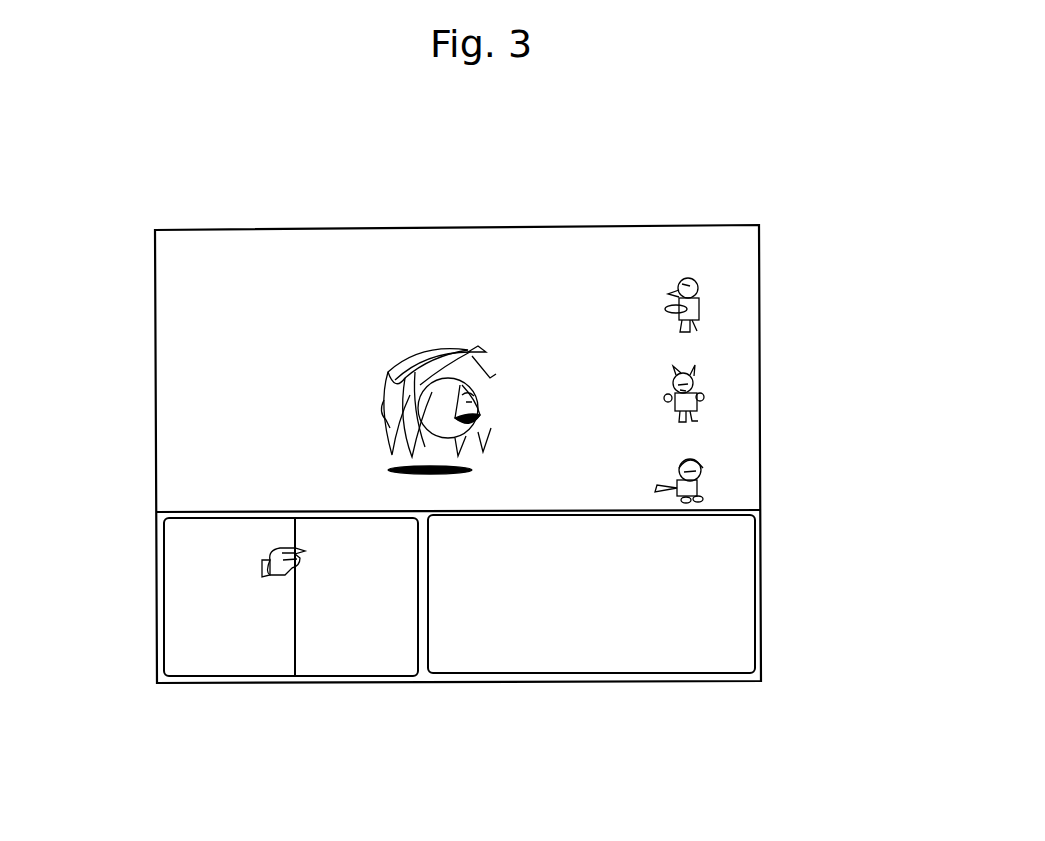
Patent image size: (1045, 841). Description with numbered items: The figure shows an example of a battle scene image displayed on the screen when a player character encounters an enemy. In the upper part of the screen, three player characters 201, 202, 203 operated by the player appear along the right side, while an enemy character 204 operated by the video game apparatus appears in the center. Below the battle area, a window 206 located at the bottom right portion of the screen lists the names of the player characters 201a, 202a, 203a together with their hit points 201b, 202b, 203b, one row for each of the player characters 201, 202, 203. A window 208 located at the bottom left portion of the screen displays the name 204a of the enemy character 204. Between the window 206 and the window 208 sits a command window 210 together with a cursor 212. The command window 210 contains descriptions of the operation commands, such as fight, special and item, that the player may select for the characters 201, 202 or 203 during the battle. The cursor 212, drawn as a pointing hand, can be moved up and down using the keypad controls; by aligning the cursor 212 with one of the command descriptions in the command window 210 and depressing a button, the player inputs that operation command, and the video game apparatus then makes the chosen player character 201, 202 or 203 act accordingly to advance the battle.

The player character 201 is at (700, 298).
The player character 202 is at (700, 383).
The player character 203 is at (703, 475).
The enemy character 204 is at (466, 346).
The name of the enemy character 204a is at (175, 557).
The name of the player character 201a is at (497, 552).
The name of the player character 202a is at (500, 587).
The name of the player character 203a is at (493, 627).
The hit points 201b is at (733, 552).
The hit points 202b is at (733, 592).
The hit points 203b is at (728, 622).
The window 206 is at (500, 660).
The window 208 is at (222, 658).
The command window 210 is at (325, 663).
The cursor 212 is at (270, 565).